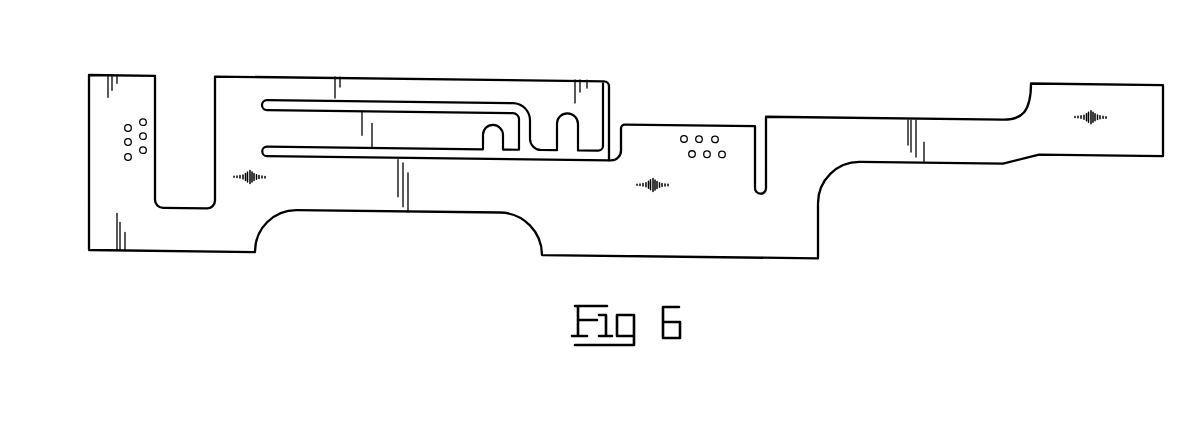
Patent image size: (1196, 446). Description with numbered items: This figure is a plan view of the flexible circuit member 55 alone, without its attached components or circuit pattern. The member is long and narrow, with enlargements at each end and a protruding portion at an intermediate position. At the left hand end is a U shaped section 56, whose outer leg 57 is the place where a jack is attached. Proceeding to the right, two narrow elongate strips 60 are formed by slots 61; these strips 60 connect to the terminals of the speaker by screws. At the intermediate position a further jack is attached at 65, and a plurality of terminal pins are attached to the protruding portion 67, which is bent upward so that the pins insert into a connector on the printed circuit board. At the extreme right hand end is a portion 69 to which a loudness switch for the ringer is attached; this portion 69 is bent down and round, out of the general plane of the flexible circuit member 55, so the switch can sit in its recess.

The flexible circuit member 55 is at (371, 209).
The U shaped section 56 is at (197, 243).
The outer leg 57 is at (108, 200).
The narrow elongate strips 60 is at (450, 128).
The slots 61 is at (342, 155).
The jack attachment location 65 is at (735, 140).
The protruding portion 67 is at (740, 248).
The end portion 69 is at (1094, 147).